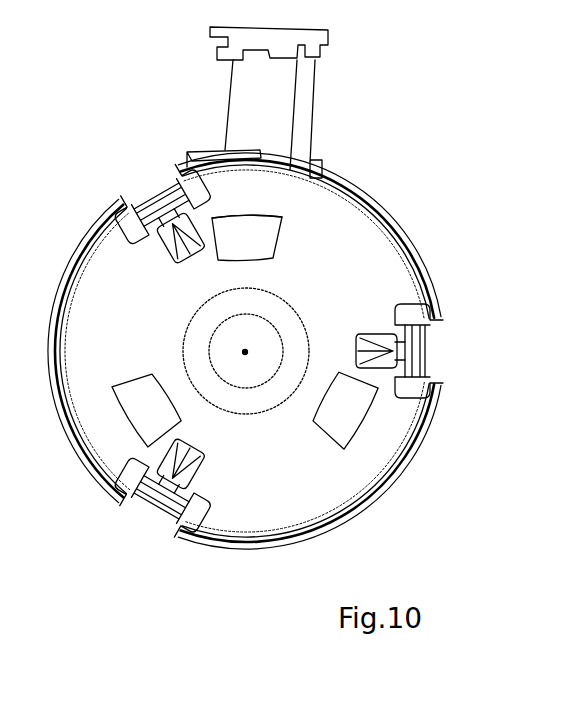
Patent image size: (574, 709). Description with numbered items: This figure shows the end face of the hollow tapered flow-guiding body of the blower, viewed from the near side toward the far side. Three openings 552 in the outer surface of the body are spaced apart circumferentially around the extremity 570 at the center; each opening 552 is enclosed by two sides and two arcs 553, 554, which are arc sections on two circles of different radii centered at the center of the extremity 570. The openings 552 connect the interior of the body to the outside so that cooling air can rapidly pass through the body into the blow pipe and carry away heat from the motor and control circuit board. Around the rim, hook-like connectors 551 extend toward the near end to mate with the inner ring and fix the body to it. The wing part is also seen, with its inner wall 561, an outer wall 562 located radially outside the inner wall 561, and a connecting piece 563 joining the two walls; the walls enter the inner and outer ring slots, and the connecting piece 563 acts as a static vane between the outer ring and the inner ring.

The connector 551 is at (432, 355).
The opening 552 is at (352, 420).
The arc 553 is at (248, 262).
The arc 554 is at (262, 213).
The inner wall 561 is at (207, 147).
The outer wall 562 is at (302, 32).
The connecting piece 563 is at (255, 103).
The extremity 570 is at (226, 340).